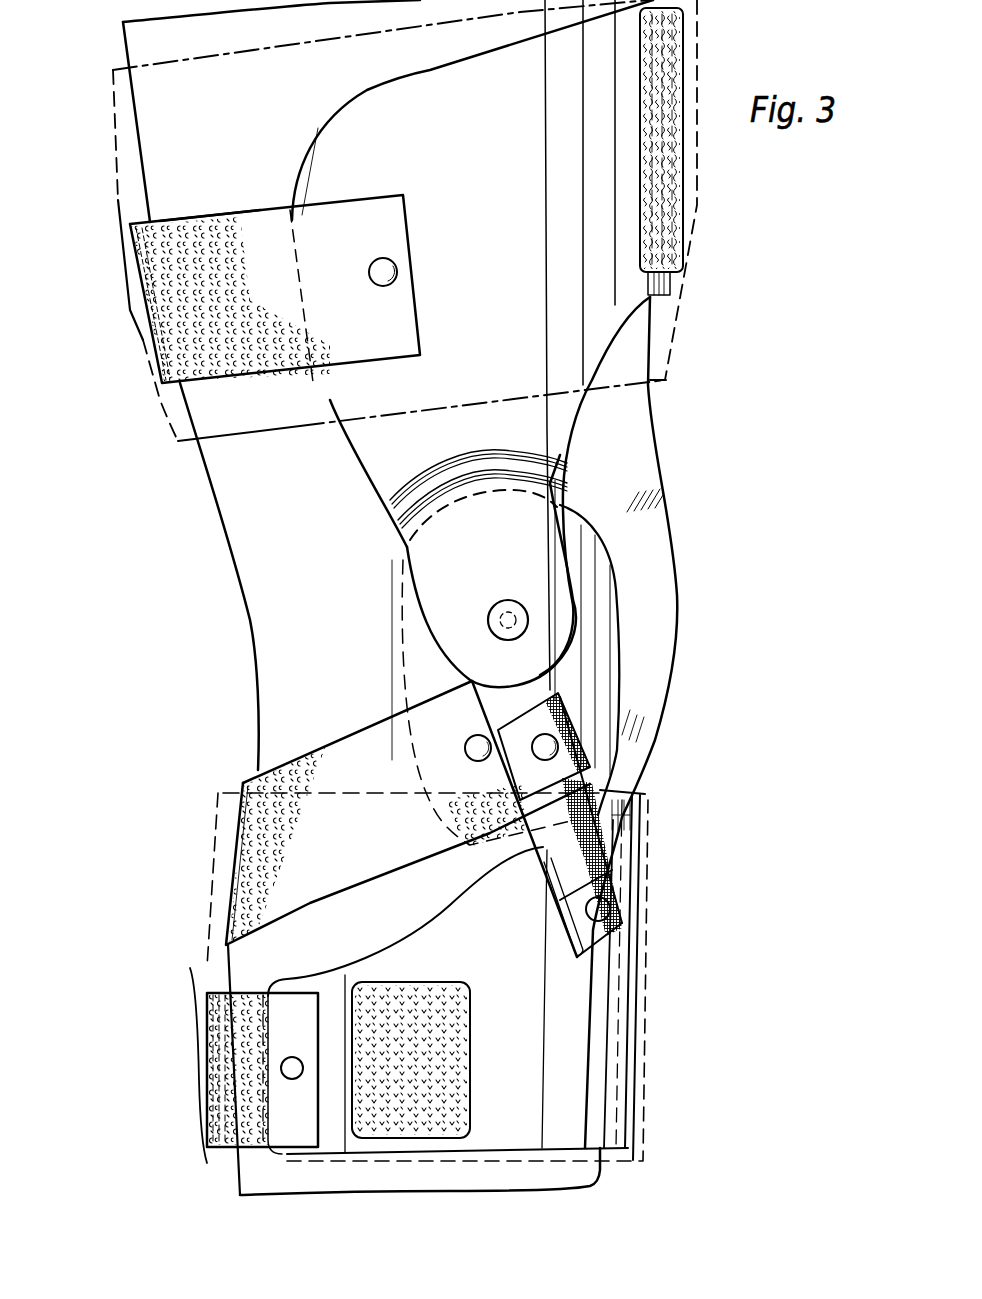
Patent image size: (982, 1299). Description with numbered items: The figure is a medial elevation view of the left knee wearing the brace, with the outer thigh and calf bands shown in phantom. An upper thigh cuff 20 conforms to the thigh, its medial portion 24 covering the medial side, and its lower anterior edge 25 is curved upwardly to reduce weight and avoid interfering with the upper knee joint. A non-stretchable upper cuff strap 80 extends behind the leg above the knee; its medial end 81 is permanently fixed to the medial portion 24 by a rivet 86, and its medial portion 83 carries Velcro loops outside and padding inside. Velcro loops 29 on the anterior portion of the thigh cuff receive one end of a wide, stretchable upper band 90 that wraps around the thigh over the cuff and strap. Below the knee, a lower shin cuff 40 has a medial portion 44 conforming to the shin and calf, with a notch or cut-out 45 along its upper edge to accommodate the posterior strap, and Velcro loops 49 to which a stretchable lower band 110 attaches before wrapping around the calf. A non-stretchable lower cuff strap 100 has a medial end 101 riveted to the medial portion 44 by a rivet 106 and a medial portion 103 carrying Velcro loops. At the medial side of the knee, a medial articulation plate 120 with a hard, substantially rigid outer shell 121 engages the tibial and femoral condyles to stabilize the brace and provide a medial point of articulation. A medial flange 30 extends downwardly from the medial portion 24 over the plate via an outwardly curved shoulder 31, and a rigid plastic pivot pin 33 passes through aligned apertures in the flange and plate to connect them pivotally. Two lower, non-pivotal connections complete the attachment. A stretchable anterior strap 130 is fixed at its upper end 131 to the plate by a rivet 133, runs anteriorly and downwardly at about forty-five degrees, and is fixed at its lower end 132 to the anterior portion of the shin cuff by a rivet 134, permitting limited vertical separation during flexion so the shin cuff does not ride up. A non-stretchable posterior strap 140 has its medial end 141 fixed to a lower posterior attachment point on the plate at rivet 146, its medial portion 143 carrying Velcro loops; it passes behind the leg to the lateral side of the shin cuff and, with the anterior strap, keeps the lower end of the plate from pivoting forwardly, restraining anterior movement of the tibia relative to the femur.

The upper thigh cuff 20 is at (676, 290).
The medial portion of thigh cuff 24 is at (452, 72).
The lower anterior edge of thigh cuff 25 is at (633, 308).
The Velcro loops 29 is at (683, 192).
The medial flange 30 is at (545, 538).
The outwardly curved shoulder 31 is at (560, 468).
The pivot pin 33 is at (528, 618).
The lower shin cuff 40 is at (637, 1058).
The medial portion of shin cuff 44 is at (460, 928).
The notch or cut-out 45 is at (420, 940).
The Velcro loops 49 is at (380, 982).
The upper cuff strap 80 is at (150, 342).
The medial end of upper cuff strap 81 is at (383, 200).
The medial portion of upper cuff strap 83 is at (216, 210).
The rivet 86 is at (373, 262).
The upper outer band 90 is at (702, 208).
The lower cuff strap 100 is at (205, 1042).
The medial end of lower cuff strap 101 is at (312, 990).
The medial portion of lower cuff strap 103 is at (201, 1035).
The rivet 106 is at (290, 1056).
The lower outer band 110 is at (650, 963).
The medial articulation plate 120 is at (617, 640).
The outer shell of medial plate 121 is at (618, 660).
The anterior strap 130 is at (600, 825).
The upper end of anterior strap 131 is at (571, 716).
The lower end of anterior strap 132 is at (565, 900).
The rivet 133 is at (560, 745).
The rivet 134 is at (611, 910).
The posterior strap 140 is at (230, 853).
The medial end of posterior strap 141 is at (432, 710).
The medial portion of posterior strap 143 is at (290, 768).
The rivet 146 is at (466, 746).